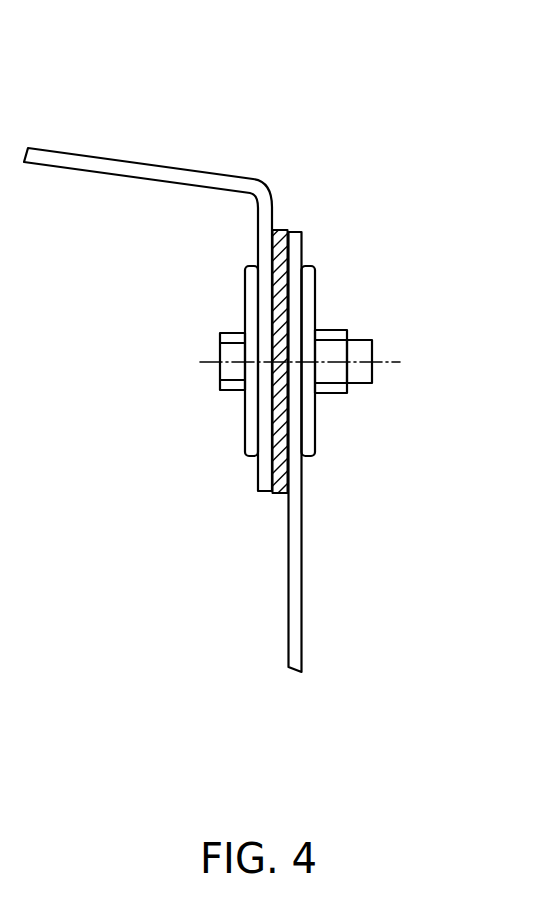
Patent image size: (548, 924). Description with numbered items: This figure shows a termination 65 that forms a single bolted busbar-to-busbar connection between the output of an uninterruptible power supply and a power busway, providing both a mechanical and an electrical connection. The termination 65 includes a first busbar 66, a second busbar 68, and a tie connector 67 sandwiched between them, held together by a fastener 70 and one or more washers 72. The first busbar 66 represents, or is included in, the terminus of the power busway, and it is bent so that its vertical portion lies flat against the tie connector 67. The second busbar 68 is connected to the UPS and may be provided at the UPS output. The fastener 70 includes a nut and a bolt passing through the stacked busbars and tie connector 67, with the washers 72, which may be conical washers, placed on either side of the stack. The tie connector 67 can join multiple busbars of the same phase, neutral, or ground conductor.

The termination 65 is at (378, 75).
The first busbar 66 is at (140, 162).
The tie connector 67 is at (280, 228).
The second busbar 68 is at (302, 602).
The fastener 70 is at (358, 340).
The washers 72 is at (245, 420).